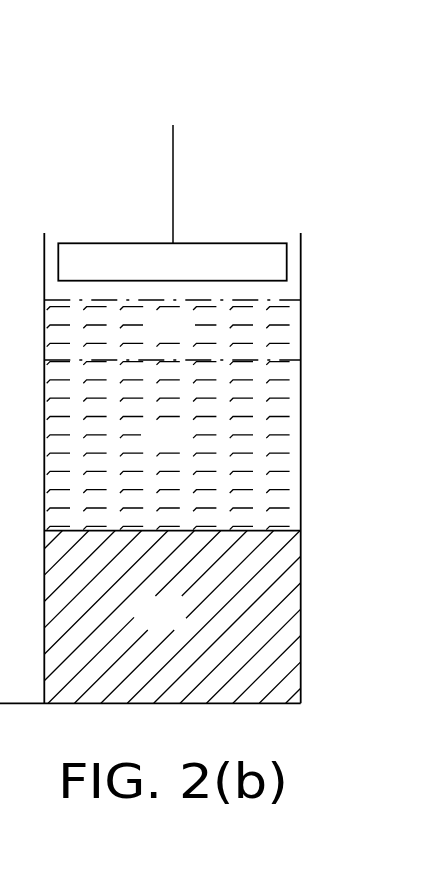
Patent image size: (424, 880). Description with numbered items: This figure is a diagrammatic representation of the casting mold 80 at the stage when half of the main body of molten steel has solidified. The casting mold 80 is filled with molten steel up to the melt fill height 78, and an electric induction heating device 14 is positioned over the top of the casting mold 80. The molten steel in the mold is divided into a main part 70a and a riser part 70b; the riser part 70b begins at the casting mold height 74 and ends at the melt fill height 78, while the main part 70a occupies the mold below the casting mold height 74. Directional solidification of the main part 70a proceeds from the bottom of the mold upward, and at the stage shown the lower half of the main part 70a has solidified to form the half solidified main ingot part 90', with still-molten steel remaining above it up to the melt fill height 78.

The electric induction heating device 14 is at (159, 274).
The melt fill height 78 is at (314, 300).
The casting mold height 74 is at (314, 360).
The riser part 70b is at (168, 327).
The main part 70a is at (168, 446).
The casting mold 80 is at (301, 540).
The half solidified main ingot part 90' is at (172, 617).